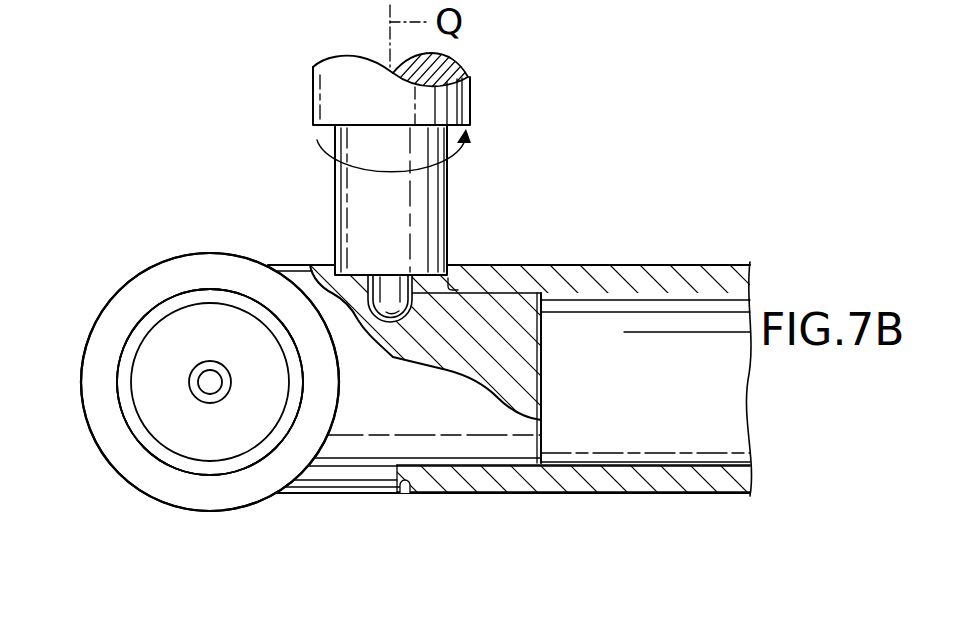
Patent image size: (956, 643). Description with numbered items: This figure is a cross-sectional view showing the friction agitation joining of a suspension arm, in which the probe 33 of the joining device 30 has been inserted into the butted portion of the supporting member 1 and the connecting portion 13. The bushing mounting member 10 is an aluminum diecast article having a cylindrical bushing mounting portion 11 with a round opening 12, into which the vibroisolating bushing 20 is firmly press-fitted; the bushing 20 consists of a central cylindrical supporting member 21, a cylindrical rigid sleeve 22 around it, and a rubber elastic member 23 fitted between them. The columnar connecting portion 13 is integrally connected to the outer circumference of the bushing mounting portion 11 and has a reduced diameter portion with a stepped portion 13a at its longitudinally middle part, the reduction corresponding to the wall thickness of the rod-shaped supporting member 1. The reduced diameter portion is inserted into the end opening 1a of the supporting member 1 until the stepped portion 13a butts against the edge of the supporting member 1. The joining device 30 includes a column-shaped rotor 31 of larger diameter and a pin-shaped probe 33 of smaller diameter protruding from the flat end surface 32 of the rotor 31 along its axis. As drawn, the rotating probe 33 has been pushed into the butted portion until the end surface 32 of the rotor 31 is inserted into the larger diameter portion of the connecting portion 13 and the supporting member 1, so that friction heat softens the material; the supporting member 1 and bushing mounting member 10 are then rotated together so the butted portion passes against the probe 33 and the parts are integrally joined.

The supporting member 1 is at (680, 266).
The opening 1a is at (437, 458).
The bushing mounting member 10 is at (206, 252).
The bushing mounting portion 11 is at (235, 492).
The opening 12 is at (197, 476).
The connecting portion 13 is at (348, 473).
The stepped portion 13a is at (408, 494).
The vibroisolating bushing 20 is at (146, 456).
The cylindrical supporting member 21 is at (195, 384).
The rigid sleeve 22 is at (180, 300).
The rubber elastic member 23 is at (180, 345).
The joining device 30 is at (311, 104).
The rotor 31 is at (449, 196).
The end surface 32 is at (453, 280).
The probe 33 is at (410, 304).